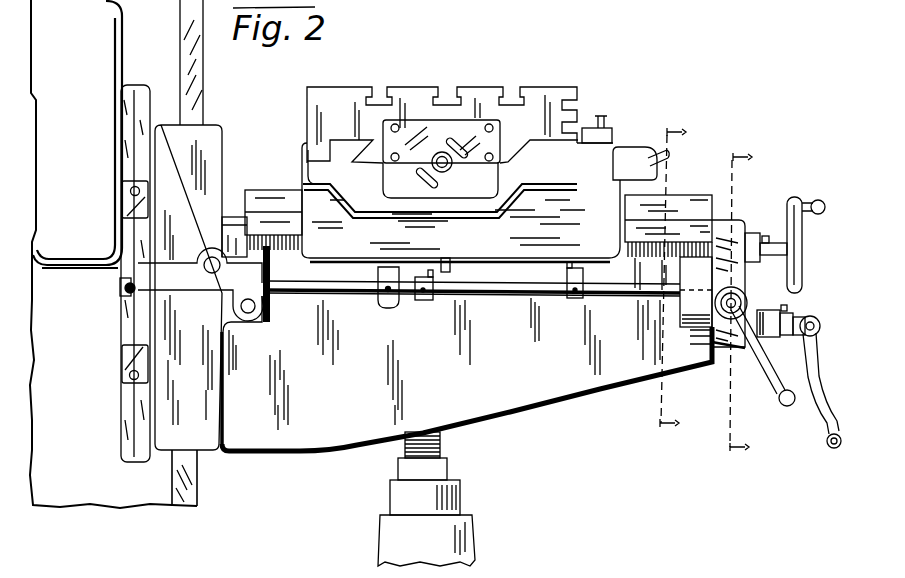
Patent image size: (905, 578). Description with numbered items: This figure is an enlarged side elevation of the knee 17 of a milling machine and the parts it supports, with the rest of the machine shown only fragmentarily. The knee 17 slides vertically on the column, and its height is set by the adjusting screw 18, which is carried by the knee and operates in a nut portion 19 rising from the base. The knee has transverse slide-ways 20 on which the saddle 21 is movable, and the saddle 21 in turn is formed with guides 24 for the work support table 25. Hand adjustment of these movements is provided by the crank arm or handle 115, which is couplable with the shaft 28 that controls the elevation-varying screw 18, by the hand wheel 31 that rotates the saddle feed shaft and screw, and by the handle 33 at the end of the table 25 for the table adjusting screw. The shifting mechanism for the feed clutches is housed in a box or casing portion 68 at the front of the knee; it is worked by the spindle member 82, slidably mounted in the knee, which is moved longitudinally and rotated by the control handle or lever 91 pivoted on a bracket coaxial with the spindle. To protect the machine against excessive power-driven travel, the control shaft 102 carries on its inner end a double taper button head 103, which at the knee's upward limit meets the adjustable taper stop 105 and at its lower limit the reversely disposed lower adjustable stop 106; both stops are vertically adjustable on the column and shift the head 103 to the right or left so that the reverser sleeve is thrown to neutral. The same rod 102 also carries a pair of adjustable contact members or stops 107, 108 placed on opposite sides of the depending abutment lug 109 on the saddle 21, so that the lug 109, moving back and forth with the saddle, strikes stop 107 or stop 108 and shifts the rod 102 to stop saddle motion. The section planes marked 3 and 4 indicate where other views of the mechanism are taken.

The section line 3- 3 is at (738, 303).
The section line 4- 4 is at (669, 279).
The knee 17 is at (295, 440).
The adjusting screw 18 is at (443, 443).
The nut portion 19 is at (452, 500).
The transverse slide-ways 20 is at (681, 197).
The saddle 21 is at (298, 177).
The guides 24 is at (521, 152).
The work support table 25 is at (479, 88).
The shaft 28 is at (813, 332).
The hand wheel 31 is at (793, 199).
The handle 33 is at (443, 158).
The box or casing portion 68 is at (734, 250).
The spindle member 82 is at (747, 304).
The control handle or lever 91 is at (781, 395).
The control shaft 102 is at (548, 295).
The double taper button head 103 is at (126, 294).
The adjustable taper stop 105 is at (127, 190).
The lower adjustable stop 106 is at (124, 372).
The adjustable contact member or stop 107 is at (427, 300).
The adjustable contact member or stop 108 is at (583, 300).
The depending abutment lug 109 is at (450, 272).
The crank arm or handle 115 is at (818, 423).